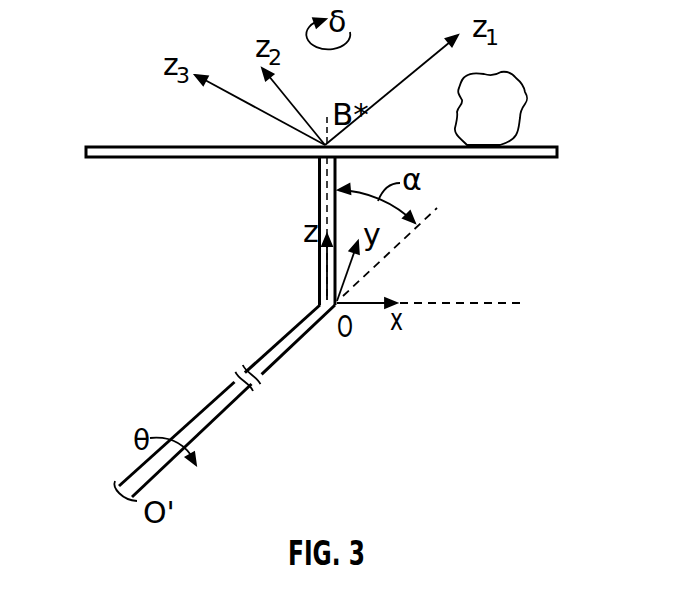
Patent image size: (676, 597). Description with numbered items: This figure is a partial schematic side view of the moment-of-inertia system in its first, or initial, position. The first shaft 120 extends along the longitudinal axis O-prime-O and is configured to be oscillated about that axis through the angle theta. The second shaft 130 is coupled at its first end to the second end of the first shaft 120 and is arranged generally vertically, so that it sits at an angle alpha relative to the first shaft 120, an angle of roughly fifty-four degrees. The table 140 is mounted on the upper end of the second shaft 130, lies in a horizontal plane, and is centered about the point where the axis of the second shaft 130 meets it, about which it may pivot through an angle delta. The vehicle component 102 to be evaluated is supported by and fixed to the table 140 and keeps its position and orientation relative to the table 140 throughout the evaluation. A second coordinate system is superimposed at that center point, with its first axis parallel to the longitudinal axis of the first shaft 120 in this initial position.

The vehicle component 102 is at (499, 72).
The first shaft 120 is at (218, 398).
The second shaft 130 is at (320, 178).
The table 140 is at (100, 146).